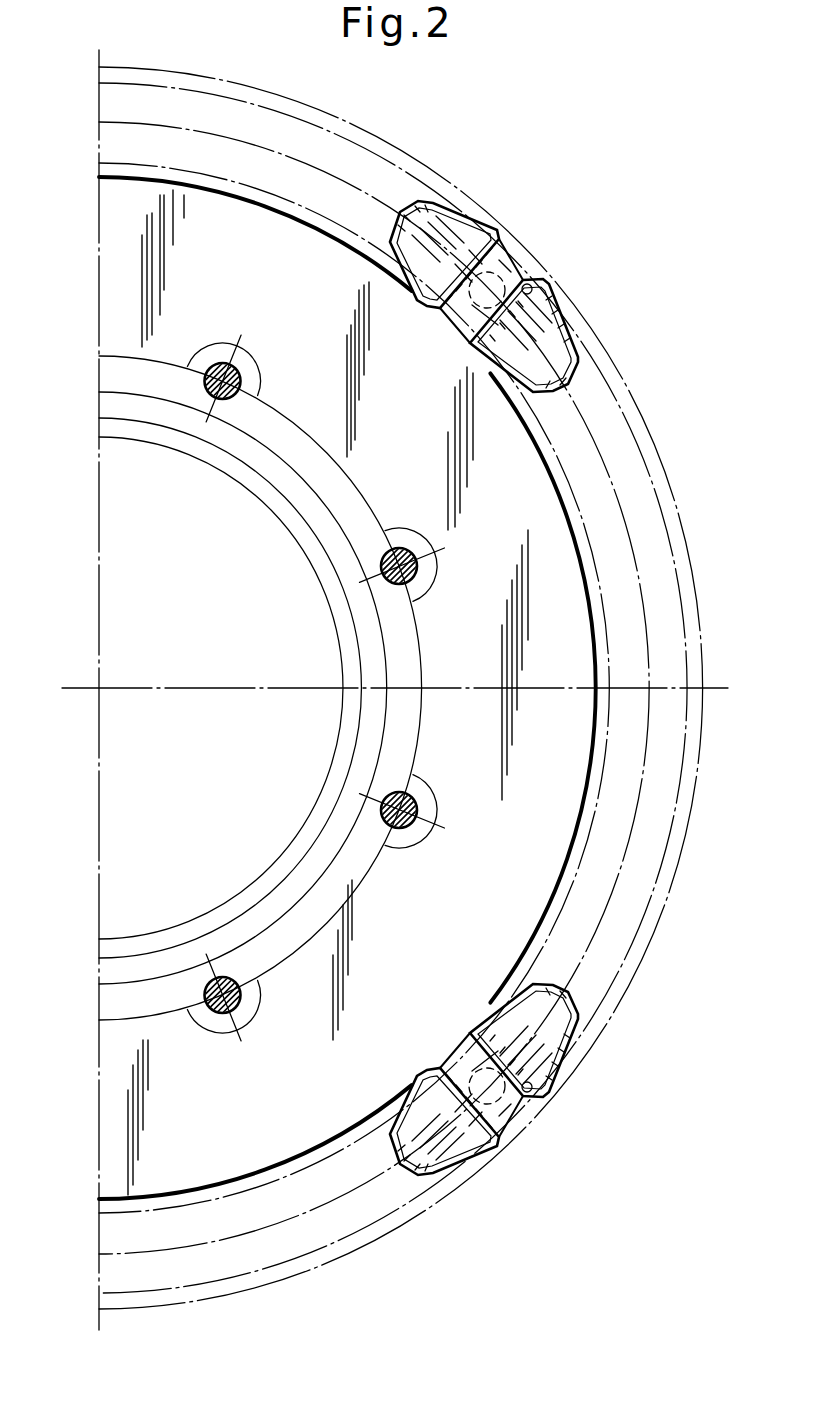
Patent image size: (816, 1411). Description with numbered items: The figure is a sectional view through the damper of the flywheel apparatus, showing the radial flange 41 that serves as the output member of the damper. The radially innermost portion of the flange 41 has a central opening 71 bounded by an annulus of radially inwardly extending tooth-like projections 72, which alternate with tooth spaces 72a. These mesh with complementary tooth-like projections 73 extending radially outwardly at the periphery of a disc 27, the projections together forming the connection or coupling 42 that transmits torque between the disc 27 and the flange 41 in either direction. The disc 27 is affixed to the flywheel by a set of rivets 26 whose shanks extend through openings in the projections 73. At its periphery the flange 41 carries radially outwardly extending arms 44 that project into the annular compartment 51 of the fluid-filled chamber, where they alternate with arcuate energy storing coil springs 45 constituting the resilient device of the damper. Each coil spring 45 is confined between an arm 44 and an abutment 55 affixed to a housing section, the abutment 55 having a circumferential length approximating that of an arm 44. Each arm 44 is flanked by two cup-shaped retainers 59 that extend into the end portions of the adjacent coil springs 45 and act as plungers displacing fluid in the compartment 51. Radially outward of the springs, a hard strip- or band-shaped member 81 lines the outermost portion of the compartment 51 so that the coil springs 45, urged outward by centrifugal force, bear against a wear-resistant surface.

The coil spring 45 is at (375, 148).
The connection or coupling 42 is at (470, 238).
The arm 44 is at (265, 357).
The abutment or stop 55 is at (500, 291).
The central opening 71 is at (298, 430).
The tooth-like projection 72 is at (337, 458).
The tooth space 72a is at (403, 523).
The annular compartment 51 is at (598, 418).
The radial flange 41 is at (468, 830).
The rivet 26 is at (412, 842).
The tooth-like projection 73 is at (338, 890).
The disc 27 is at (350, 905).
The cup-shaped retainer 59 is at (542, 1098).
The strip- or band-shaped member 81 is at (542, 1125).